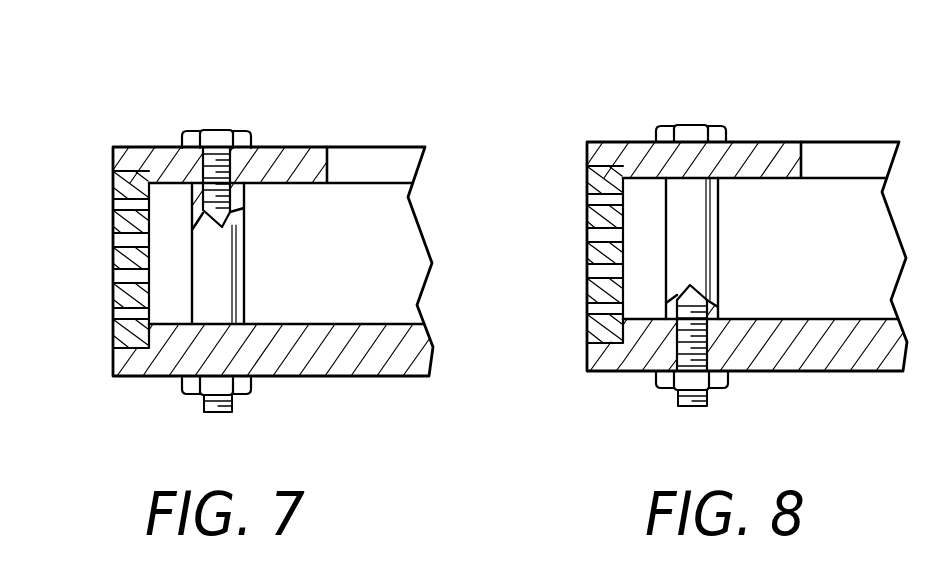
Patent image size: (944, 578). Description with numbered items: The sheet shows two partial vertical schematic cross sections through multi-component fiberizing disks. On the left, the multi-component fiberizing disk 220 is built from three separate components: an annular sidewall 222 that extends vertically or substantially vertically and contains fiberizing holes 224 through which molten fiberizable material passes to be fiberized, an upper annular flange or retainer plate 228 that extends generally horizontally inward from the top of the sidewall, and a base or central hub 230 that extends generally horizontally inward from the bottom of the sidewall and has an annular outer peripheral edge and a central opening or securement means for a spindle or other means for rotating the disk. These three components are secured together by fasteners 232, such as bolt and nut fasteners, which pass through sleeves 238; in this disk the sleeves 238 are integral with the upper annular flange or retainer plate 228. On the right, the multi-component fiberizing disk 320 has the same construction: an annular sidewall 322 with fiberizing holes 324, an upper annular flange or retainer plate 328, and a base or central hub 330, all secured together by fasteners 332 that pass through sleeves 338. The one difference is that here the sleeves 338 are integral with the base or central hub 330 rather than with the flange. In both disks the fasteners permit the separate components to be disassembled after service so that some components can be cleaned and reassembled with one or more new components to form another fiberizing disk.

In FIG. 7, the multi-component fiberizing disk 220 is at (424, 112).
In FIG. 7, the annular sidewall 222 is at (113, 335).
In FIG. 7, the fiberizing holes 224 is at (113, 280).
In FIG. 7, the upper annular flange or retainer plate 228 is at (291, 147).
In FIG. 7, the base or central hub 230 is at (305, 367).
In FIG. 7, the fasteners 232 is at (233, 130).
In FIG. 7, the sleeves 238 is at (228, 290).
In FIG. 8, the multi-component fiberizing disk 320 is at (847, 90).
In FIG. 8, the annular sidewall 322 is at (587, 330).
In FIG. 8, the fiberizing holes 324 is at (587, 275).
In FIG. 8, the upper annular flange or retainer plate 328 is at (768, 142).
In FIG. 8, the base or central hub 330 is at (800, 360).
In FIG. 8, the fasteners 332 is at (693, 122).
In FIG. 8, the sleeves 338 is at (697, 252).